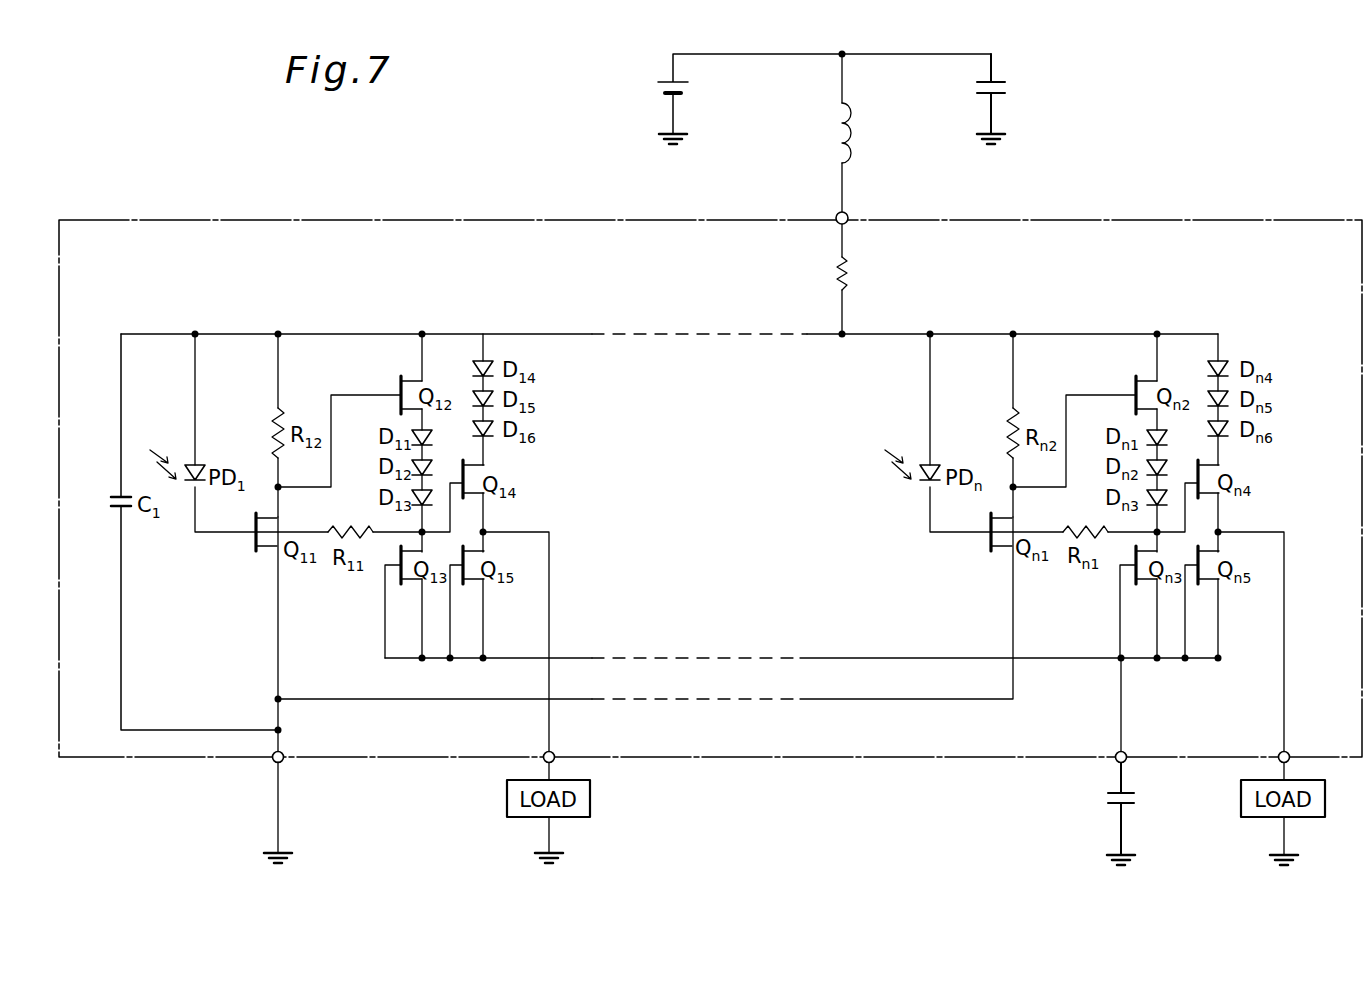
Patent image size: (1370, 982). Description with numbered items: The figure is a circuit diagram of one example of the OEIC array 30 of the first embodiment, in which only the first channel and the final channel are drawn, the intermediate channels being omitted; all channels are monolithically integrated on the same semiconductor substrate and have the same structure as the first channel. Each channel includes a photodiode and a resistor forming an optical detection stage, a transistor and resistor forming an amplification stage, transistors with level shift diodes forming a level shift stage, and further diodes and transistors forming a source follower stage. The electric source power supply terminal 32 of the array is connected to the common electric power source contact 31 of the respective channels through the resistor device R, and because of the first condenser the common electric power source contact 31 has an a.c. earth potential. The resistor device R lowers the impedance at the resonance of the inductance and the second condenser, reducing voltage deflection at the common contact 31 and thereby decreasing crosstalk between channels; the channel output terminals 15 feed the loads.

The OEIC array 30 is at (1213, 220).
The common electric power source contact 31 is at (278, 334).
The electric source power supply terminal 32 is at (847, 214).
The output terminal 15 is at (553, 753).